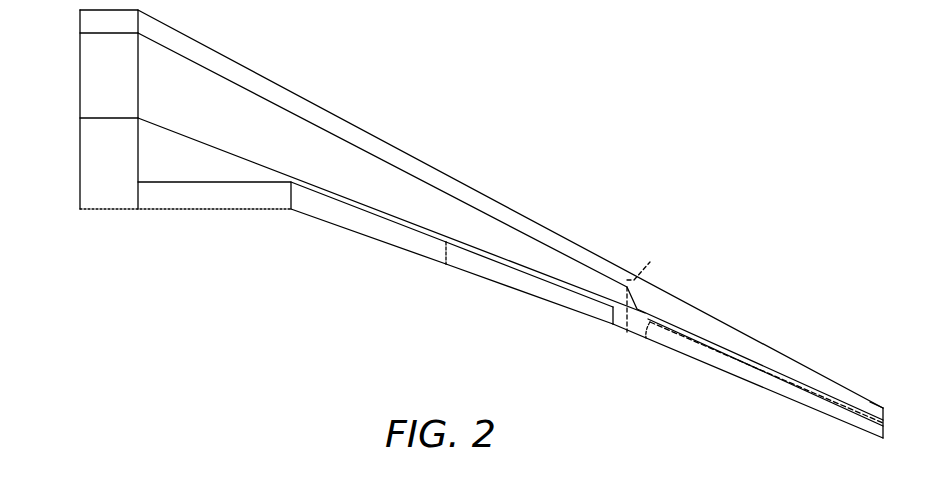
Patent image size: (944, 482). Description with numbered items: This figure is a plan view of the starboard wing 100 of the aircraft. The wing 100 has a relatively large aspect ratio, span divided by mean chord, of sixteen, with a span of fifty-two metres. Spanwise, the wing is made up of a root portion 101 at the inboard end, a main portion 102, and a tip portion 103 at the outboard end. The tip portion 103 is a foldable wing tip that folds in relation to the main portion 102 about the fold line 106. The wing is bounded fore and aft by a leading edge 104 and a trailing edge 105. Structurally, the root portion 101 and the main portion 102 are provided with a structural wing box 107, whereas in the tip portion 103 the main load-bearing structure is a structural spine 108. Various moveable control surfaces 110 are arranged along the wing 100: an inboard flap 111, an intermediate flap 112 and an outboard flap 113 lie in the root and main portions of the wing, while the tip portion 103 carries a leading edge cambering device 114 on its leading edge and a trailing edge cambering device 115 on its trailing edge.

The starboard wing 100 is at (557, 133).
The root portion 101 is at (151, 209).
The main portion 102 is at (366, 140).
The tip portion 103 is at (770, 386).
The leading edge 104 is at (228, 58).
The trailing edge 105 is at (590, 318).
The fold line 106 is at (650, 262).
The structural wing box 107 is at (148, 81).
The structural spine 108 is at (800, 387).
The moveable control surfaces 110 is at (283, 292).
The inboard flap 111 is at (243, 209).
The intermediate flap 112 is at (362, 232).
The outboard flap 113 is at (508, 285).
The leading edge cambering device 114 is at (740, 333).
The trailing edge cambering device 115 is at (690, 354).